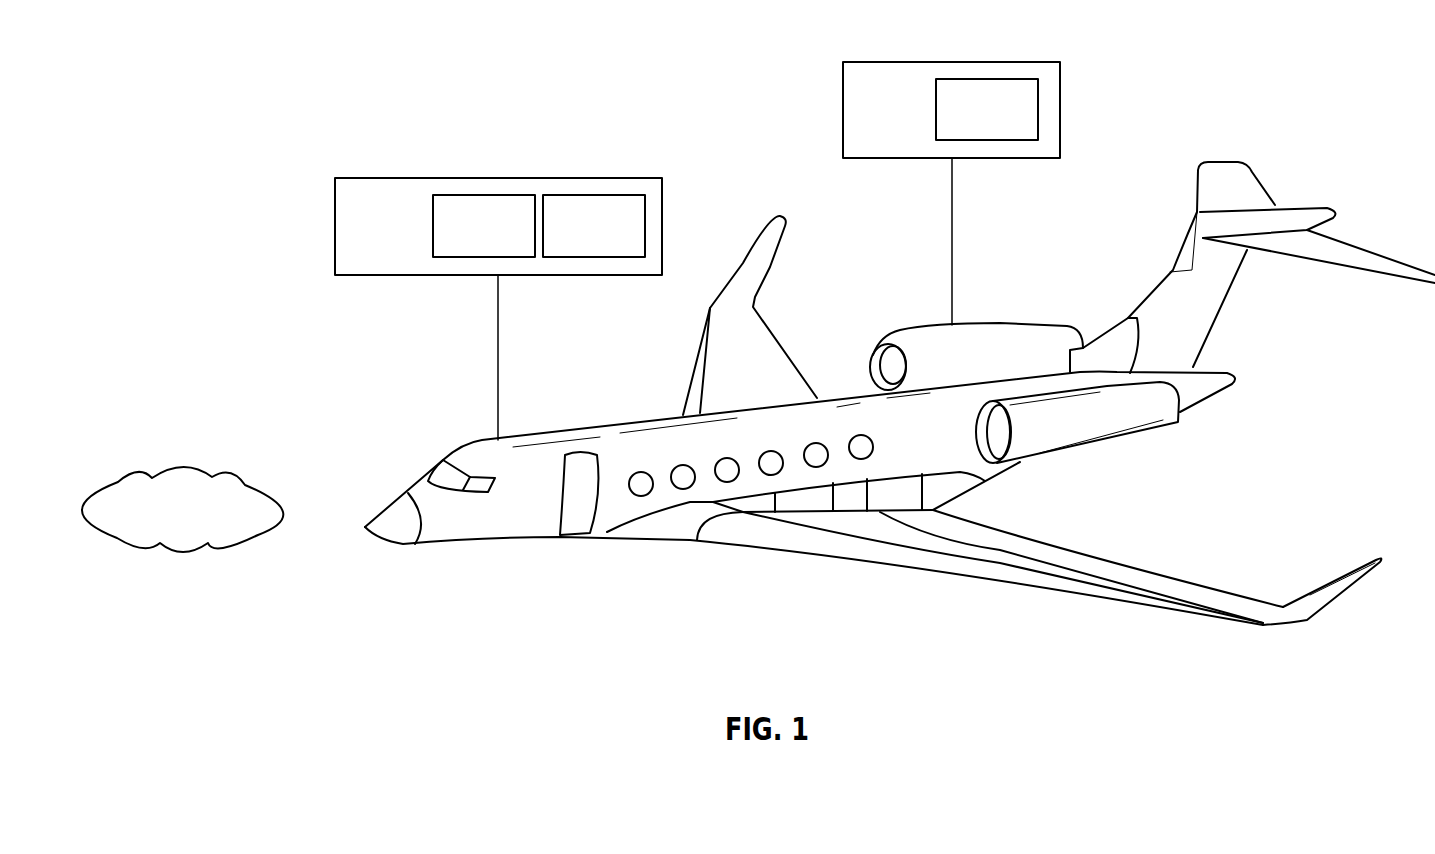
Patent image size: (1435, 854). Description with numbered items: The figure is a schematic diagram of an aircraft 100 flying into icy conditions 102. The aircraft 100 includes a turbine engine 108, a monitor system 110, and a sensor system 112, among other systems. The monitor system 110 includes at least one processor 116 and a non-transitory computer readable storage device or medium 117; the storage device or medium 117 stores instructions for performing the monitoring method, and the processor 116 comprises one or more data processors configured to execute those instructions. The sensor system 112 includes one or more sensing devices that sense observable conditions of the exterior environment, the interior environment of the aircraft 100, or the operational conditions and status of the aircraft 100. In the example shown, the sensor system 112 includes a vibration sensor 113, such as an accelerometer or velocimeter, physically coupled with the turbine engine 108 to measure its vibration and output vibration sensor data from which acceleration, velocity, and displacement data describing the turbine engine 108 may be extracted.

The aircraft 100 is at (242, 92).
The icy conditions 102 is at (203, 524).
The turbine engine 108 is at (1052, 420).
The monitor system 110 is at (407, 240).
The sensor system 112 is at (914, 128).
The vibration sensor 113 is at (1008, 128).
The processor 116 is at (499, 240).
The non-transitory computer readable storage device or medium 117 is at (617, 240).